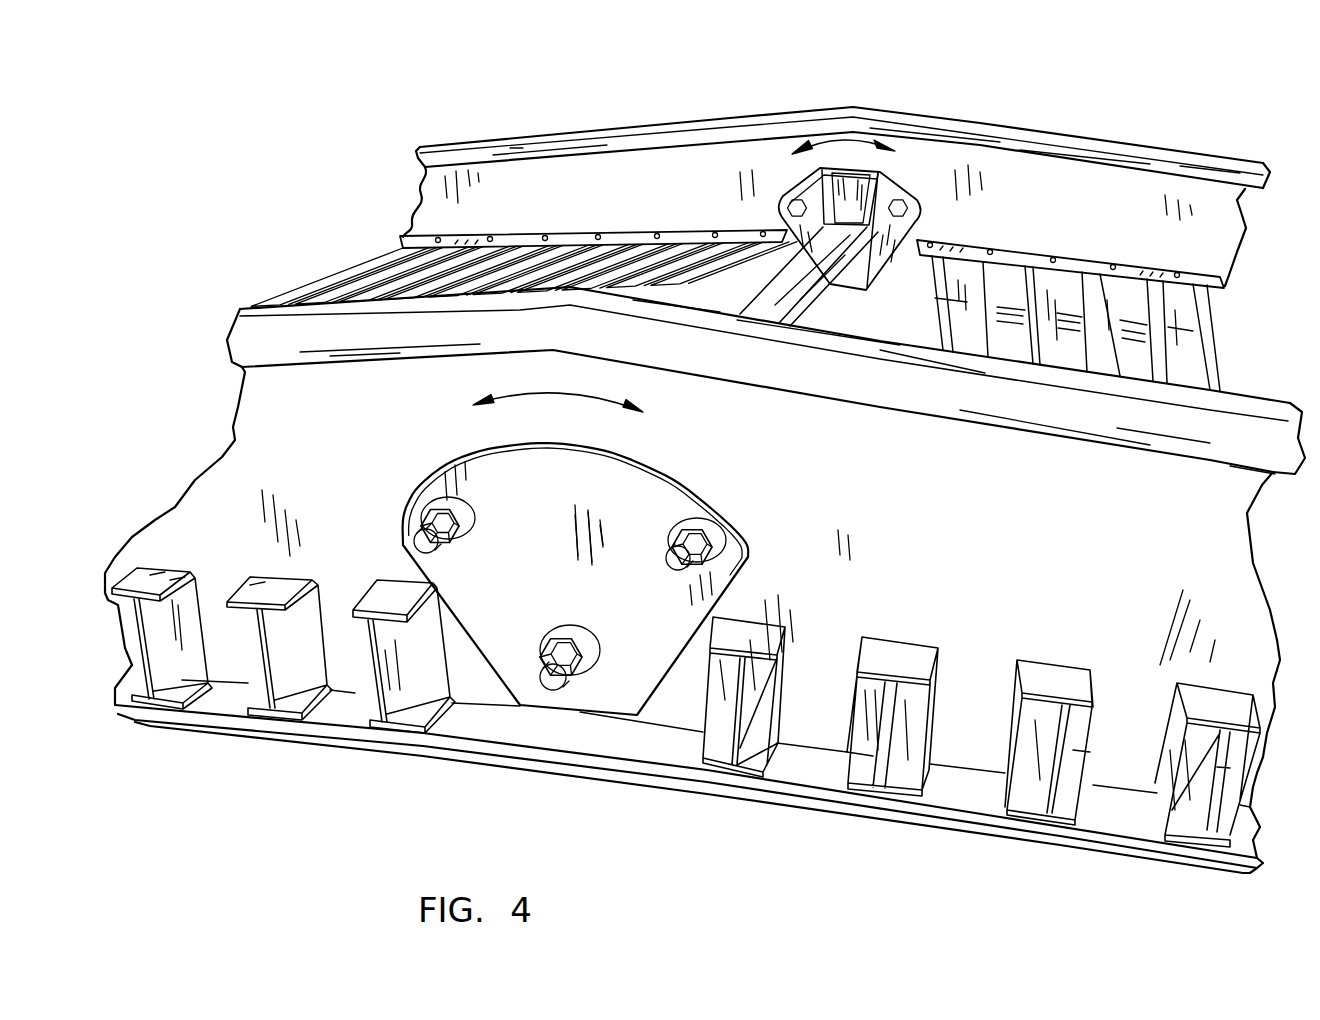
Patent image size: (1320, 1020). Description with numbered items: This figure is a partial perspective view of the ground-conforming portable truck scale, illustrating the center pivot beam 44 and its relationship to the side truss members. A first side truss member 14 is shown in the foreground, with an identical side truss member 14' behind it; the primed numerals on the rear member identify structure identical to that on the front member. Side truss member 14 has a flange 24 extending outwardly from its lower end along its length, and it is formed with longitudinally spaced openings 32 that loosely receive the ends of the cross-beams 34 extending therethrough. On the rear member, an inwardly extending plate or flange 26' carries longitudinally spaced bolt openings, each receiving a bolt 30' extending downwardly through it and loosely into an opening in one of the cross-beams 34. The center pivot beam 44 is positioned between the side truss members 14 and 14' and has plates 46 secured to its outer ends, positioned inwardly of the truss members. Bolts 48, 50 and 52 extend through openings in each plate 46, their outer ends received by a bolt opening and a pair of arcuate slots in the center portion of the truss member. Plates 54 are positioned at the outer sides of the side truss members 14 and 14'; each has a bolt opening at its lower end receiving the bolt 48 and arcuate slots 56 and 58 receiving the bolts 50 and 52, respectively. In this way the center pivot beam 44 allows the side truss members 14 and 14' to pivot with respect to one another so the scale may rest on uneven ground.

The first side truss member 14 is at (711, 572).
The side truss member 14' is at (836, 173).
The flange 24 is at (967, 790).
The inwardly extending plate or flange 26' is at (1070, 232).
The bolt 30' is at (734, 215).
The openings 32 is at (845, 683).
The cross-beams 34 is at (903, 653).
The center pivot beam 44 is at (843, 251).
The plates 46 is at (903, 190).
The bolt 48 is at (590, 638).
The bolt 50 is at (440, 549).
The bolt 52 is at (666, 558).
The plates 54 is at (660, 488).
The arcuate slot 56 is at (462, 506).
The arcuate slot 58 is at (662, 525).